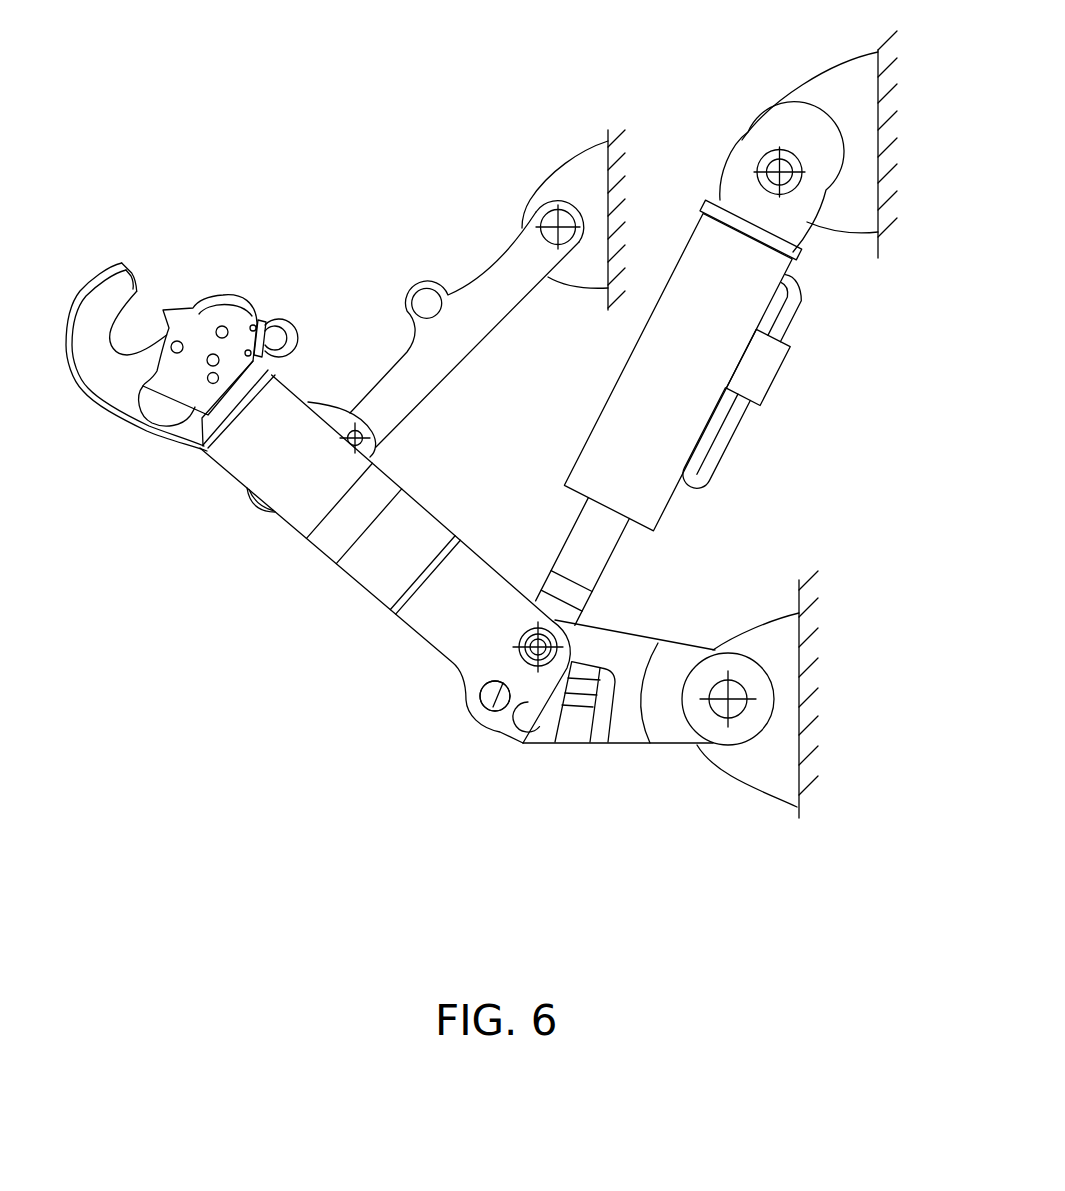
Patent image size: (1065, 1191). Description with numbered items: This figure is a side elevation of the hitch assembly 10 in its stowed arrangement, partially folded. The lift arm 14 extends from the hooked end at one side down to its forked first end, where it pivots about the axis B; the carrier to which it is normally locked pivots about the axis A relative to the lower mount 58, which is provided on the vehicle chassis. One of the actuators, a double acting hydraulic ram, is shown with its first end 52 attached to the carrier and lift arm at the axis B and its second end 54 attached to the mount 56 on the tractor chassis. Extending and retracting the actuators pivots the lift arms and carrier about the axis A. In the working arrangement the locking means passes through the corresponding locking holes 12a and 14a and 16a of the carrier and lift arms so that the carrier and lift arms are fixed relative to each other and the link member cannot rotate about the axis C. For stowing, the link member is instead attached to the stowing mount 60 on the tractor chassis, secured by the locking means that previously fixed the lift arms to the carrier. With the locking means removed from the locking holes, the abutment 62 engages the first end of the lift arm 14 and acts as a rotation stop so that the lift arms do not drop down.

The hitch assembly 10 is at (410, 150).
The locking hole 12a is at (523, 745).
The lift arm 14 is at (283, 480).
The locking hole 14a is at (483, 703).
The locking hole 16a is at (495, 696).
The first end 52 is at (536, 589).
The second end 54 is at (693, 320).
The mount 56 is at (838, 117).
The lower mount 58 is at (773, 772).
The stowing mount 60 is at (592, 195).
The abutment 62 is at (680, 717).
The axis A is at (729, 698).
The axis B is at (538, 660).
The axis C is at (353, 430).